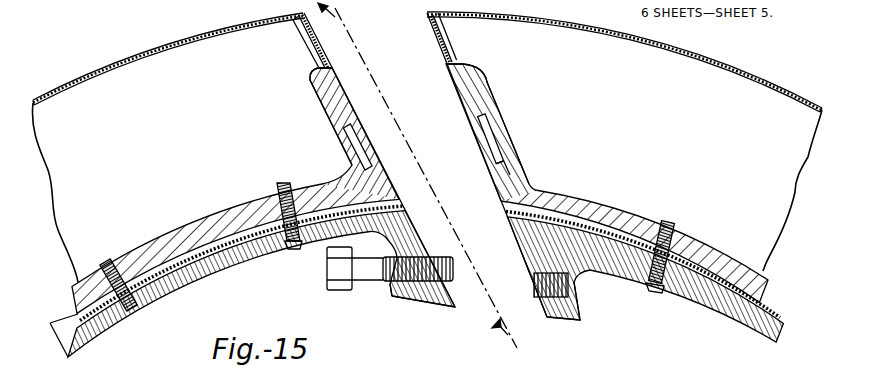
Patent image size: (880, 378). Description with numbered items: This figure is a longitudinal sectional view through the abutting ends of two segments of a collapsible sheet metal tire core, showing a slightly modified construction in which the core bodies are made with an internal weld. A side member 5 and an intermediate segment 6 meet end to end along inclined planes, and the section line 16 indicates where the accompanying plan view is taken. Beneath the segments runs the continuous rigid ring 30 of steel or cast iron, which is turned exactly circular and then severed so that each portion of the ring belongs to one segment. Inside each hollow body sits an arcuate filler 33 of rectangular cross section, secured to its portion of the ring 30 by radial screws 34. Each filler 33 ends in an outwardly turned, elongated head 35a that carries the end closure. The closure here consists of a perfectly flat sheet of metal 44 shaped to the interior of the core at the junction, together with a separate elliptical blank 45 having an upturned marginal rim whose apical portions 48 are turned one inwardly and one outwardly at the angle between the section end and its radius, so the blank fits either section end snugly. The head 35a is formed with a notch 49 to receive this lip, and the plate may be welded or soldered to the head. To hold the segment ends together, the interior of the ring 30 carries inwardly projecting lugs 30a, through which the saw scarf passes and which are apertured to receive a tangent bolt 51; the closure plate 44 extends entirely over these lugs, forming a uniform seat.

The side member 5 is at (705, 52).
The intermediate segment 6 is at (133, 55).
The section line 16 is at (417, 178).
The continuous rigid ring 30 is at (170, 282).
The inwardly projecting lug 30a is at (567, 320).
The arcuate filler 33 is at (152, 242).
The radial screw 34 is at (283, 185).
The head 35a is at (507, 100).
The closure plate 44 is at (325, 60).
The elliptical blank 45 is at (302, 50).
The apical portion 48 is at (293, 22).
The notch 49 is at (520, 164).
The tangent bolt 51 is at (363, 282).